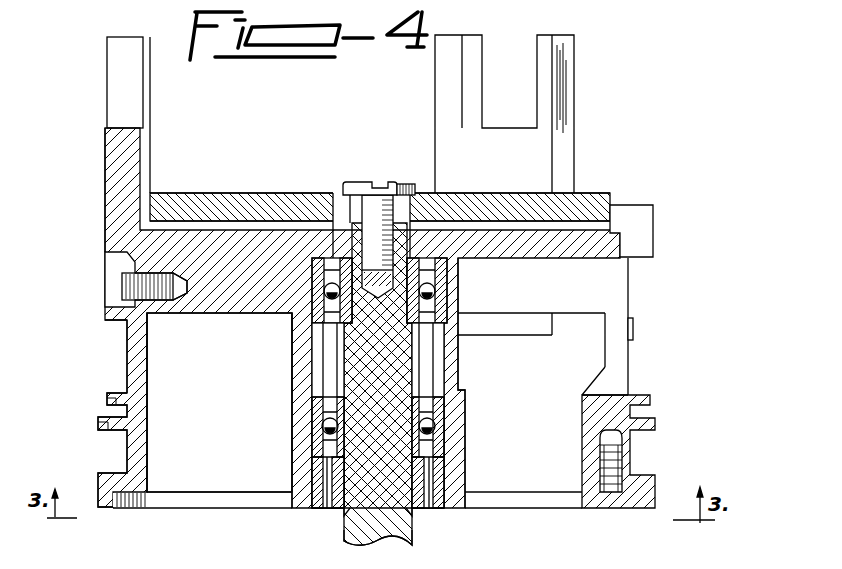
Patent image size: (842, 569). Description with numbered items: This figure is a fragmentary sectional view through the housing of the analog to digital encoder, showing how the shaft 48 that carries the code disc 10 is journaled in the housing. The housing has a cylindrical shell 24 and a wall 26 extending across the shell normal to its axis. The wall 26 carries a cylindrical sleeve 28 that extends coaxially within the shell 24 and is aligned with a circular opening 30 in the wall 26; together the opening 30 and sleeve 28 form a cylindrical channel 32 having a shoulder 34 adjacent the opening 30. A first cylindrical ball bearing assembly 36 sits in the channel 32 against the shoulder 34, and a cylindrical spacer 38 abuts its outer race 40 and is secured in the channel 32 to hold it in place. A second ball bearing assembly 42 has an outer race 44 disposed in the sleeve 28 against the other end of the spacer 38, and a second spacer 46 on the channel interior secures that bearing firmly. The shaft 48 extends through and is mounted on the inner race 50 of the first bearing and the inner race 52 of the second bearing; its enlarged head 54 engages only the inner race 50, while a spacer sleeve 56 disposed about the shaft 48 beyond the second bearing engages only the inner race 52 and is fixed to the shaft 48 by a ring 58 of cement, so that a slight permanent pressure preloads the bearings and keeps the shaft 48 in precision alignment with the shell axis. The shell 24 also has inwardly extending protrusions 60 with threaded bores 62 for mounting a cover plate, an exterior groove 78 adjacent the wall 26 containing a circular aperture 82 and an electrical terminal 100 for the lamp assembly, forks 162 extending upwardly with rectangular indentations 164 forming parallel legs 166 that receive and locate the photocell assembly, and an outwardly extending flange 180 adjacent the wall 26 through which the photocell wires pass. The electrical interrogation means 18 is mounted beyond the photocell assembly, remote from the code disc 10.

The code disc 10 is at (580, 200).
The electrical interrogation means 18 is at (124, 348).
The cylindrical shell 24 is at (136, 383).
The wall 26 is at (240, 298).
The cylindrical sleeve 28 is at (312, 410).
The circular opening 30 is at (338, 243).
The cylindrical channel 32 is at (450, 357).
The shoulder 34 is at (455, 278).
The first cylindrical ball bearing assembly 36 is at (448, 291).
The spacer 38 is at (312, 354).
The outer race 40 is at (322, 293).
The second ball bearing assembly 42 is at (446, 425).
The outer race 44 is at (318, 424).
The second spacer 46 is at (318, 468).
The shaft 48 is at (393, 369).
The inner race 50 is at (343, 313).
The inner race 52 is at (412, 411).
The head 54 is at (340, 197).
The spacer sleeve 56 is at (343, 480).
The ring of cement 58 is at (413, 511).
The protrusions 60 is at (592, 447).
The threaded bores 62 is at (625, 460).
The groove 78 is at (632, 287).
The circular aperture 82 is at (615, 392).
The electrical terminal 100 is at (634, 328).
The forks 162 is at (572, 119).
The rectangular indentations 164 is at (473, 67).
The legs 166 is at (444, 42).
The flange 180 is at (666, 231).